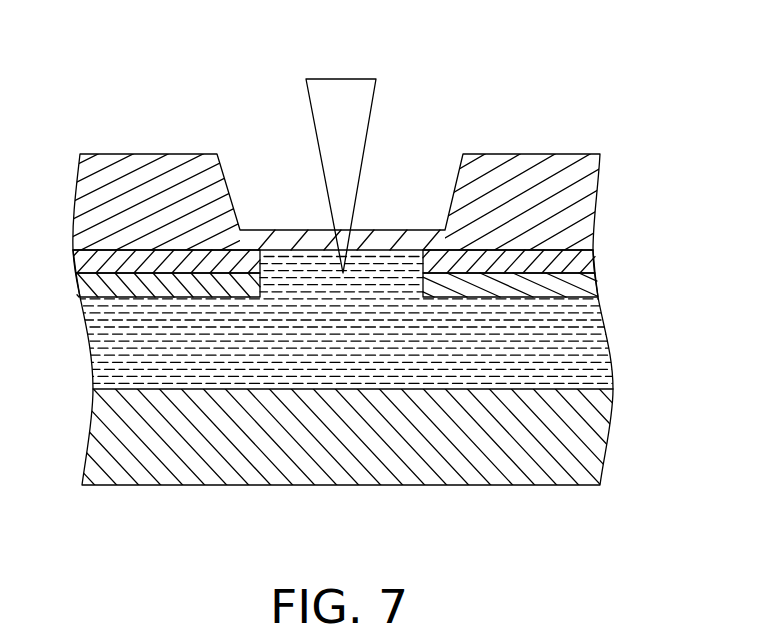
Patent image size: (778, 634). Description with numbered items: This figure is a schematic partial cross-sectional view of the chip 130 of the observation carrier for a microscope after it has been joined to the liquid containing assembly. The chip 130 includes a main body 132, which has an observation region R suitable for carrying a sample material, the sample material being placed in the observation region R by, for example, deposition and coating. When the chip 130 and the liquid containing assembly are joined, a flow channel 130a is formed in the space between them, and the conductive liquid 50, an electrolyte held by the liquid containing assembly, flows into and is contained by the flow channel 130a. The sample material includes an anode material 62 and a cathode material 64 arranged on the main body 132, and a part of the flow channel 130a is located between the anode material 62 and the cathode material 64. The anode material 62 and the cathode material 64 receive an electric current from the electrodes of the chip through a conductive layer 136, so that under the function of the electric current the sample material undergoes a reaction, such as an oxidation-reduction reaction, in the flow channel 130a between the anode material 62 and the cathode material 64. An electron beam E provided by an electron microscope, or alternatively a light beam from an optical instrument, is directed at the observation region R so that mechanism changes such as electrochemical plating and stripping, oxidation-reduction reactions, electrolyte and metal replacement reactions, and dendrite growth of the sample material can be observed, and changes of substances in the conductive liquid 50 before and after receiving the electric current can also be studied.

The chip 130 is at (743, 563).
The flow channel 130a is at (518, 357).
The main body 132 is at (380, 440).
The conductive liquid 50 is at (232, 353).
The anode material 62 is at (137, 283).
The cathode material 64 is at (538, 283).
The conductive layer 136 is at (178, 263).
The electron beam E is at (350, 130).
The observation region R is at (272, 163).